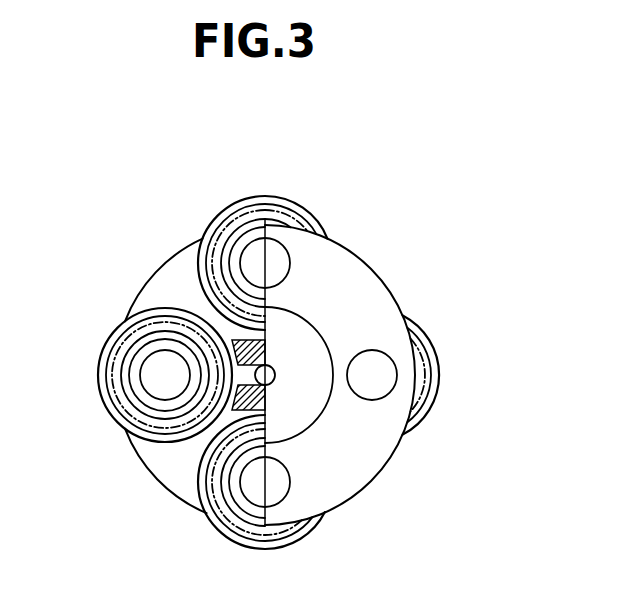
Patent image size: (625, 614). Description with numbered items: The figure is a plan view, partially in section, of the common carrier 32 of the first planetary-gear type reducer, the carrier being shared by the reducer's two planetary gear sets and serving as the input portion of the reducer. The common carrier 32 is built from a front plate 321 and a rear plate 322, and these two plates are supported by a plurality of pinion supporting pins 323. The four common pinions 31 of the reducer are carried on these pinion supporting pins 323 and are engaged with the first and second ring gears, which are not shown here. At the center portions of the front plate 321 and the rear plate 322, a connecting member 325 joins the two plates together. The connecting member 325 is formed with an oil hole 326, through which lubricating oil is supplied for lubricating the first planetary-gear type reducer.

The common pinion 31 is at (286, 198).
The common carrier 32 is at (280, 365).
The front plate 321 is at (168, 478).
The rear plate 322 is at (347, 470).
The pinion supporting pin 323 is at (252, 252).
The connecting member 325 is at (238, 343).
The oil hole 326 is at (274, 371).